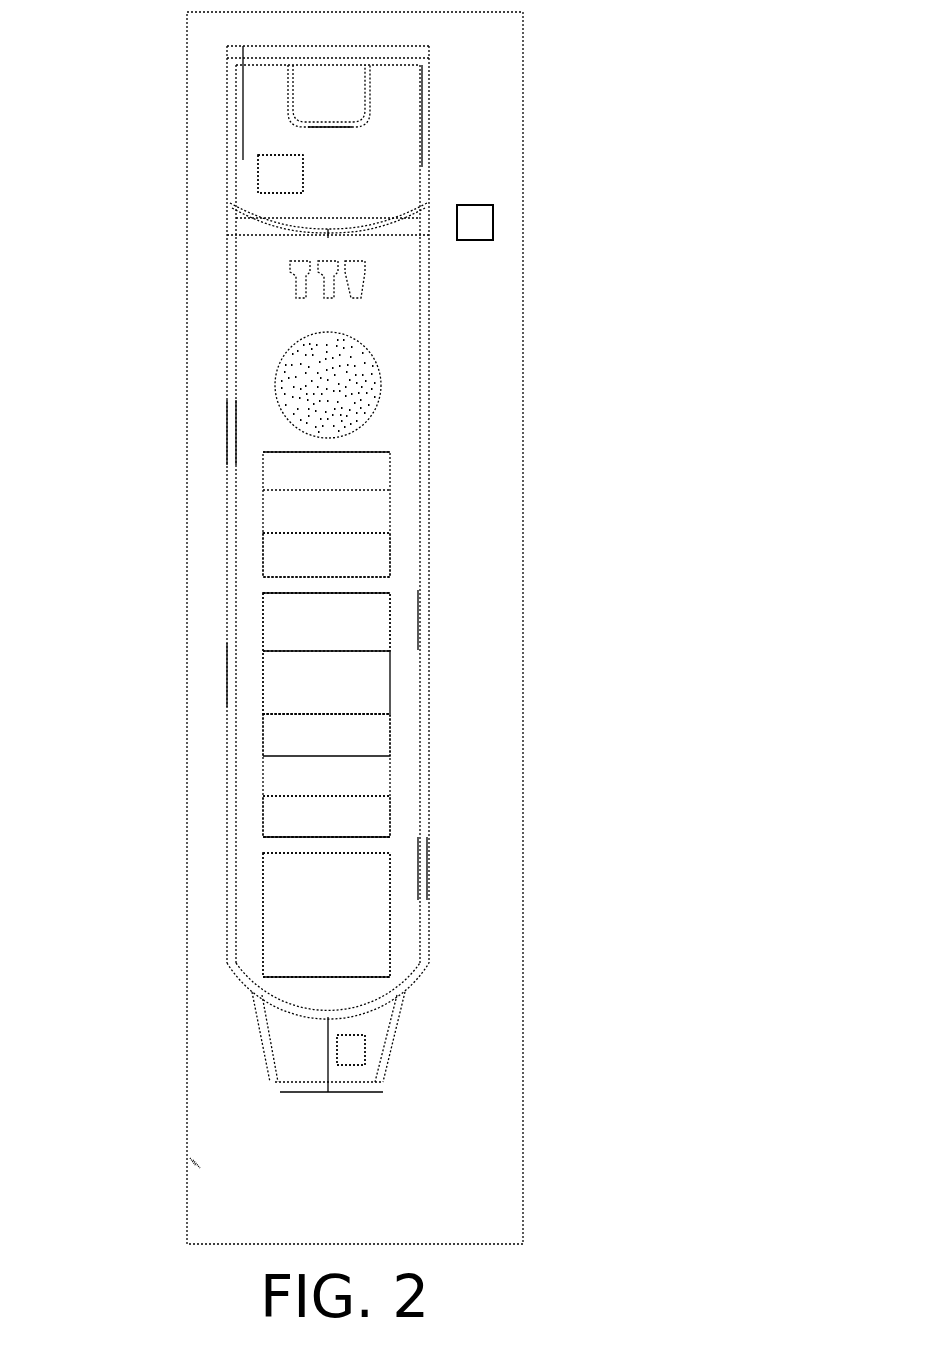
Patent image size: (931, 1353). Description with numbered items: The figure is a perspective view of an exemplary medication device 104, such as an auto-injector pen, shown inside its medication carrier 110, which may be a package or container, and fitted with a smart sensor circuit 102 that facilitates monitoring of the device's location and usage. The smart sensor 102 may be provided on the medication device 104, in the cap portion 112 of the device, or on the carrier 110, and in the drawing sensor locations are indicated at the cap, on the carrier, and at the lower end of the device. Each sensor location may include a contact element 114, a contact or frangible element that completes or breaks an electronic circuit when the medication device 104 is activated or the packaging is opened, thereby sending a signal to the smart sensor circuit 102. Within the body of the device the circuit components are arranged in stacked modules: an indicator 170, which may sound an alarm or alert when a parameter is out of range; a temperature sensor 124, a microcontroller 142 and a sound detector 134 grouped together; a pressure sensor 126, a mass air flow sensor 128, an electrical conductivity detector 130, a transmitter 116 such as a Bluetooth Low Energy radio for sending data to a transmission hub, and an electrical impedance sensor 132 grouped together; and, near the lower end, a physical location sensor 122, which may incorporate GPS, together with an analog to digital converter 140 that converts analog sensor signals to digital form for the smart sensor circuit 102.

The smart sensor circuit 102 is at (272, 173).
The contact element 114 is at (258, 187).
The medication carrier 110 is at (188, 292).
The medication device 104 is at (226, 583).
The cap portion 112 is at (420, 140).
The indicator 170 is at (380, 340).
The temperature sensor 124 is at (382, 498).
The microcontroller 142 is at (390, 520).
The sound detector 134 is at (390, 558).
The pressure sensor 126 is at (390, 645).
The mass air flow sensor 128 is at (368, 698).
The electrical conductivity detector 130 is at (368, 745).
The transmitter 116 is at (382, 715).
The electrical impedance sensor 132 is at (378, 822).
The physical location sensor 122 is at (381, 915).
The analog to digital converter 140 is at (355, 943).